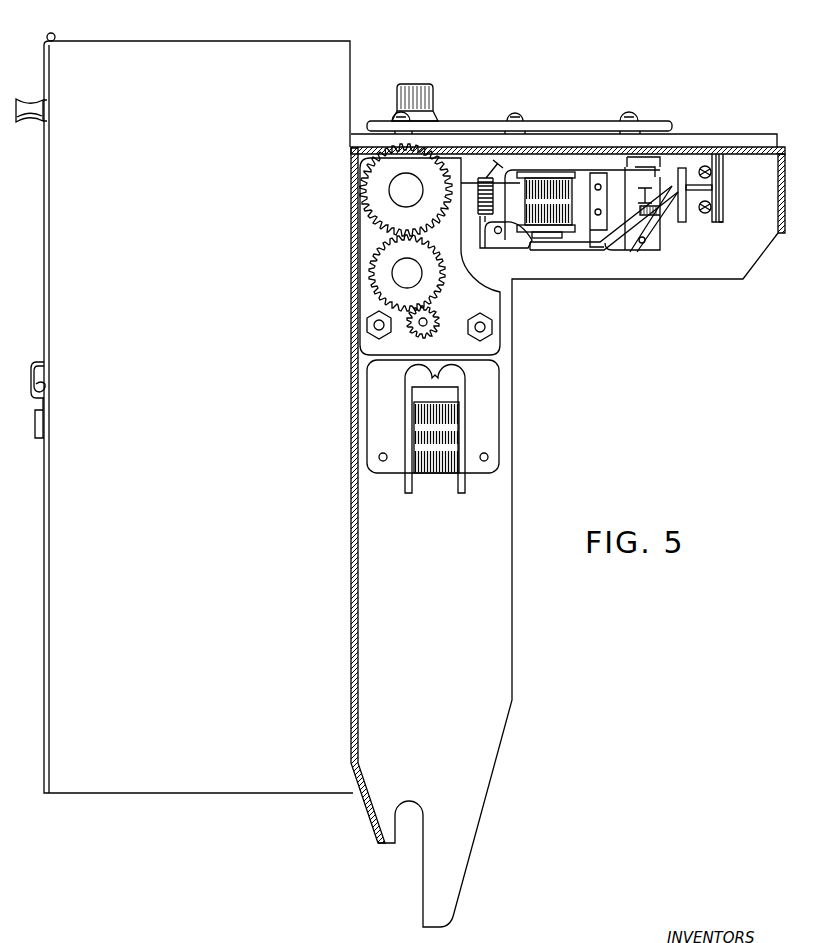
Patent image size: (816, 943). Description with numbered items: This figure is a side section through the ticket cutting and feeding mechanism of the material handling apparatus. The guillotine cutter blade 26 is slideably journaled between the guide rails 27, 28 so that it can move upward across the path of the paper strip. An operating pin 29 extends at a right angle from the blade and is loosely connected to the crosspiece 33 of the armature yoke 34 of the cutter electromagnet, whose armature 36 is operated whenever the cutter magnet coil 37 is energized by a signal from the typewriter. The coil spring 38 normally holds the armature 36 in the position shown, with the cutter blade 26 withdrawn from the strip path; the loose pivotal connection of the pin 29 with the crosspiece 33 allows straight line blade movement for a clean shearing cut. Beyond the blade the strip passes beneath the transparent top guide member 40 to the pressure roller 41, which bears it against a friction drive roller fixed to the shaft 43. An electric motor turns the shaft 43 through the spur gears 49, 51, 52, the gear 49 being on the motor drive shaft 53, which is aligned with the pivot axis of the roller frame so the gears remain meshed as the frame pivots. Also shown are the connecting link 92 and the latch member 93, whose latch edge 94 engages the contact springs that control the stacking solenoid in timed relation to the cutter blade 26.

The guillotine cutter blade 26 is at (720, 222).
The guide rail 27 is at (708, 218).
The guide rail 28 is at (723, 196).
The operating pin 29 is at (694, 186).
The crosspiece 33 is at (676, 172).
The armature yoke 34 is at (655, 215).
The armature 36 is at (550, 250).
The cutter magnet coil 37 is at (555, 232).
The coil spring 38 is at (476, 229).
The transparent top guide member 40 is at (565, 121).
The pressure roller 41 is at (433, 100).
The shaft 43 is at (400, 183).
The spur gear 49 is at (432, 316).
The spur gear 51 is at (380, 270).
The spur gear 52 is at (370, 196).
The electric motor drive shaft 53 is at (421, 328).
The connecting link 92 is at (469, 185).
The latch member 93 is at (630, 252).
The latch edge 94 is at (644, 243).